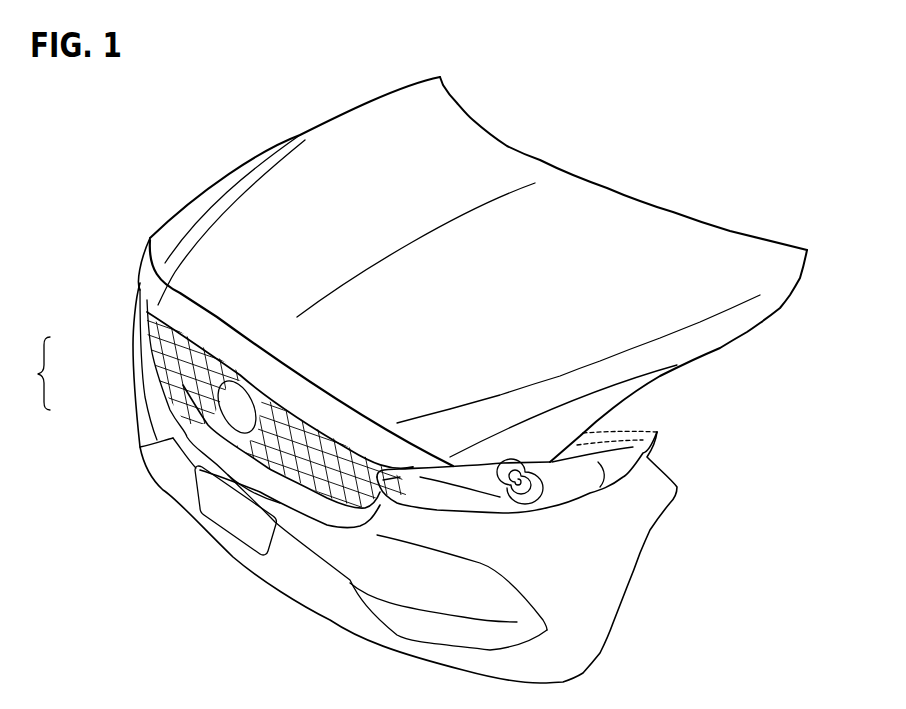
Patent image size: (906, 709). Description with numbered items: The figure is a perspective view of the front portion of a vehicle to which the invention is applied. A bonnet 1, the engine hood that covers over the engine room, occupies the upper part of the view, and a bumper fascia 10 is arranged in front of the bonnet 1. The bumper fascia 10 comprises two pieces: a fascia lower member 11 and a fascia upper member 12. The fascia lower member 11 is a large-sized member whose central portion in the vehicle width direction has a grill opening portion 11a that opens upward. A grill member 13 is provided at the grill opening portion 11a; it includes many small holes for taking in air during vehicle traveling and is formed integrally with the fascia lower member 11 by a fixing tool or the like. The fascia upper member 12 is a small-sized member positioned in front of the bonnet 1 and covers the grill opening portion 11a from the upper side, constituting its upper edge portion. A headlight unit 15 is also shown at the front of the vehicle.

The bonnet 1 is at (618, 217).
The bumper fascia 10 is at (29, 373).
The fascia lower member 11 is at (143, 427).
The grill opening portion 11a is at (297, 470).
The fascia upper member 12 is at (200, 327).
The grill member 13 is at (282, 435).
The headlight unit 15 is at (560, 492).